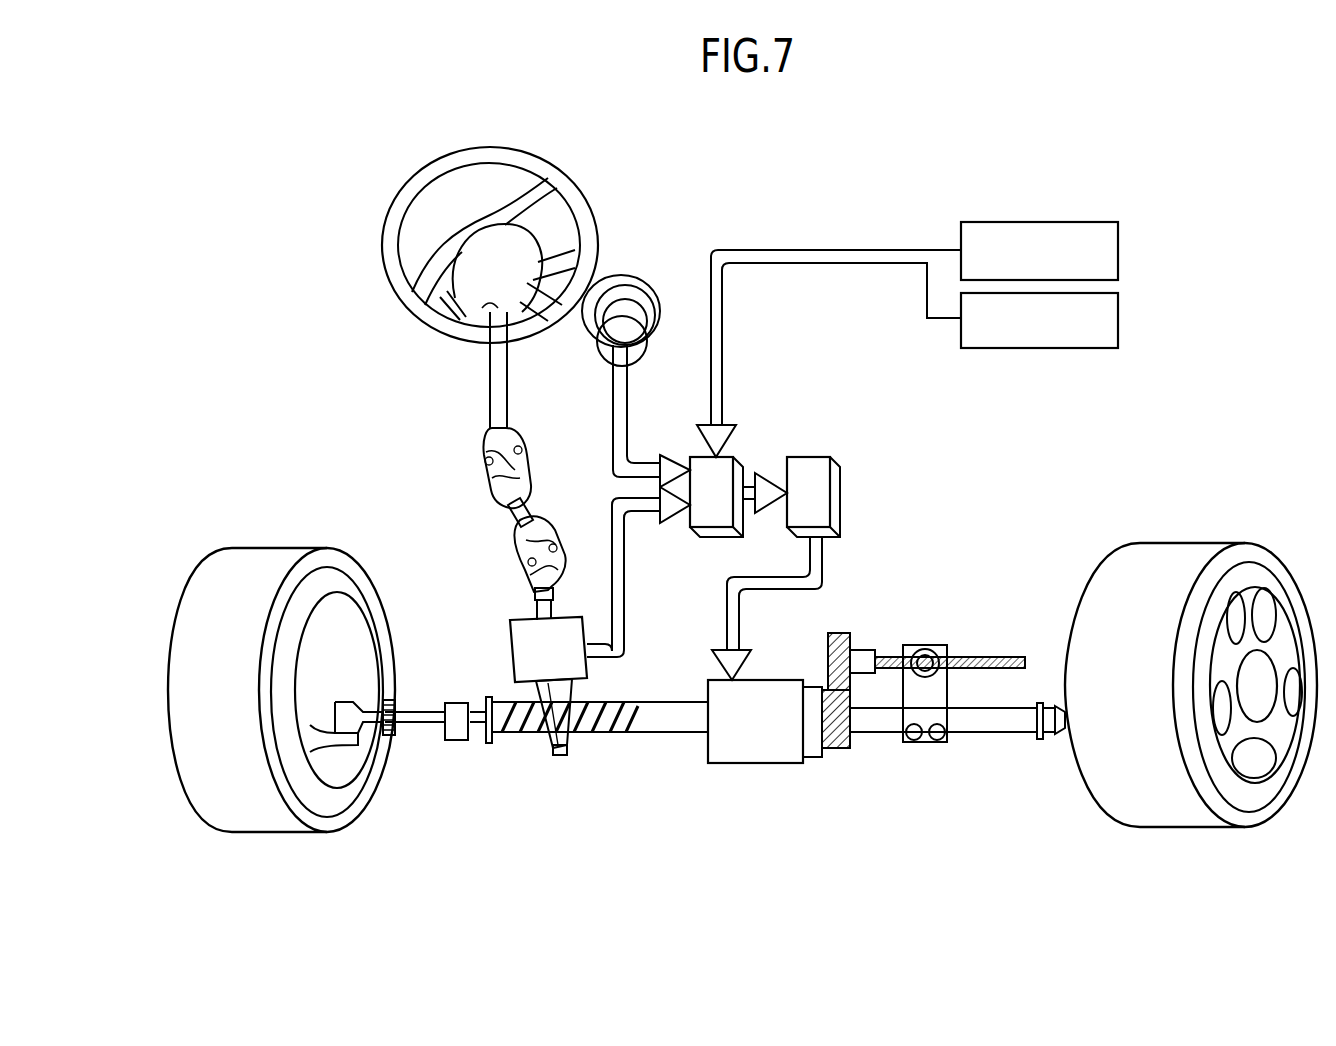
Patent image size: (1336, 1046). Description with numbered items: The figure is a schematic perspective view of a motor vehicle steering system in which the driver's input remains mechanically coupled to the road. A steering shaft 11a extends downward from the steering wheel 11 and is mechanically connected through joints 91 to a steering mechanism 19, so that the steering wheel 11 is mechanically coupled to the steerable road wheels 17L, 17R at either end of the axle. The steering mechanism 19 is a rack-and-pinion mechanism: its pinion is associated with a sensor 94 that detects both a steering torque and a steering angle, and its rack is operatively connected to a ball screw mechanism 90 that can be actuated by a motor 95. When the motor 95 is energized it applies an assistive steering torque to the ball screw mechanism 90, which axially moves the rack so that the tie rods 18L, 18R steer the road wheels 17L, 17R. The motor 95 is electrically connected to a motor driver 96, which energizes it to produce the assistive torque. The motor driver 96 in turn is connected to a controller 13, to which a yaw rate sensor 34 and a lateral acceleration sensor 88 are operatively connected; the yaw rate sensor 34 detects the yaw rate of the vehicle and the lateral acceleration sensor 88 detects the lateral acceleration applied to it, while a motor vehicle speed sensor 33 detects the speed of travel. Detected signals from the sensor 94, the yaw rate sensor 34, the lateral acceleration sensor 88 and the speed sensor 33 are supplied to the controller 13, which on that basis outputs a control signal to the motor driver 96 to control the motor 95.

The steering wheel 11 is at (553, 180).
The steering shaft 11a is at (498, 390).
The joints 91 is at (518, 545).
The motor vehicle speed sensor 33 is at (640, 280).
The yaw rate sensor 34 is at (1065, 236).
The lateral acceleration sensor 88 is at (1095, 327).
The controller 13 is at (722, 478).
The motor driver 96 is at (820, 498).
The motor 95 is at (775, 750).
The ball screw mechanism 90 is at (978, 633).
The steering mechanism 19 is at (588, 750).
The sensor 94 is at (535, 655).
The tie rod 18L is at (417, 727).
The tie rod 18R is at (1057, 735).
The steerable road wheel 17L is at (256, 792).
The steerable road wheel 17R is at (1168, 570).